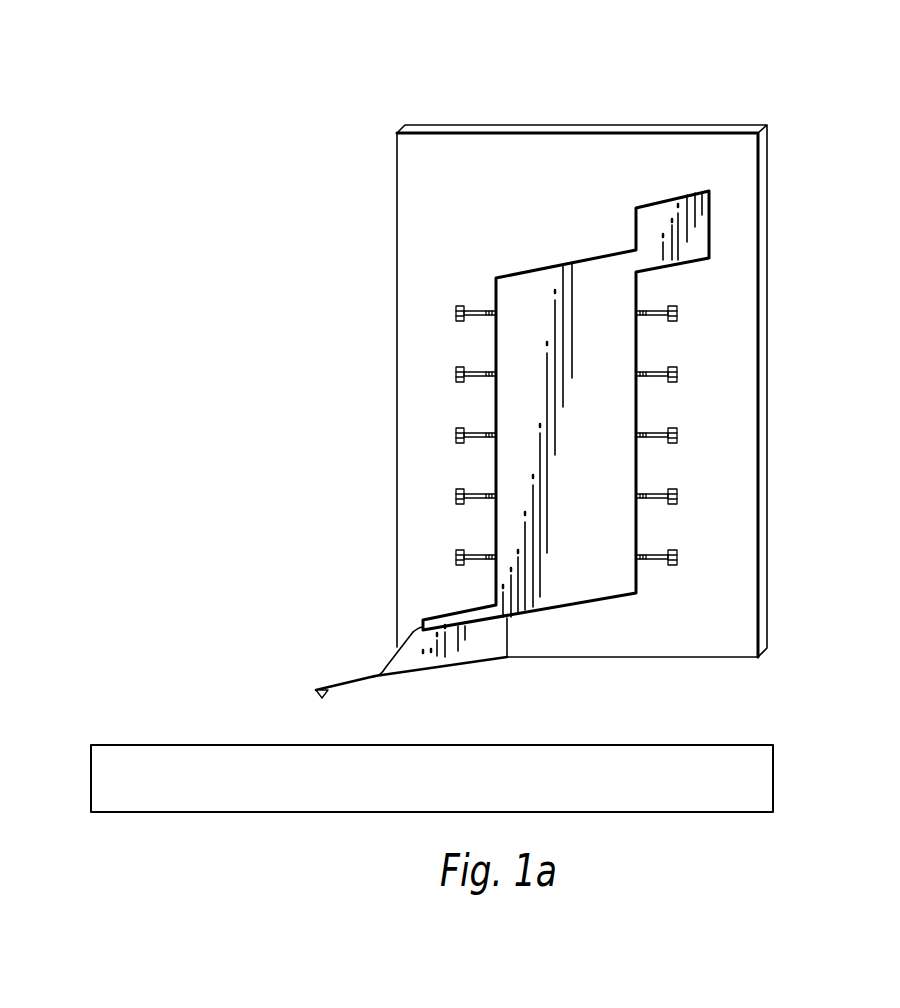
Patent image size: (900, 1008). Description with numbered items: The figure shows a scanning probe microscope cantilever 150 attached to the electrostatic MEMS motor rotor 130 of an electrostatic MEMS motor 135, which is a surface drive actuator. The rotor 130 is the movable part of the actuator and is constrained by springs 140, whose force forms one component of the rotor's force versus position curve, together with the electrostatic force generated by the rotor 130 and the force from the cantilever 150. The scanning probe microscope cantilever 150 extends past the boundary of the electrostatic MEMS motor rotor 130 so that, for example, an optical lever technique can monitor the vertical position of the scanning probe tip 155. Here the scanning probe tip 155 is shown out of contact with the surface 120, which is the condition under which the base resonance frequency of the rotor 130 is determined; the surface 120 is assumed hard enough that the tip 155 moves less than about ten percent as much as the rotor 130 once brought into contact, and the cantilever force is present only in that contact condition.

The surface 120 is at (752, 745).
The electrostatic MEMS motor rotor 130 is at (616, 416).
The electrostatic MEMS motor 135 is at (796, 86).
The springs 140 is at (468, 308).
The scanning probe microscope cantilever 150 is at (378, 675).
The scanning probe tip 155 is at (316, 690).